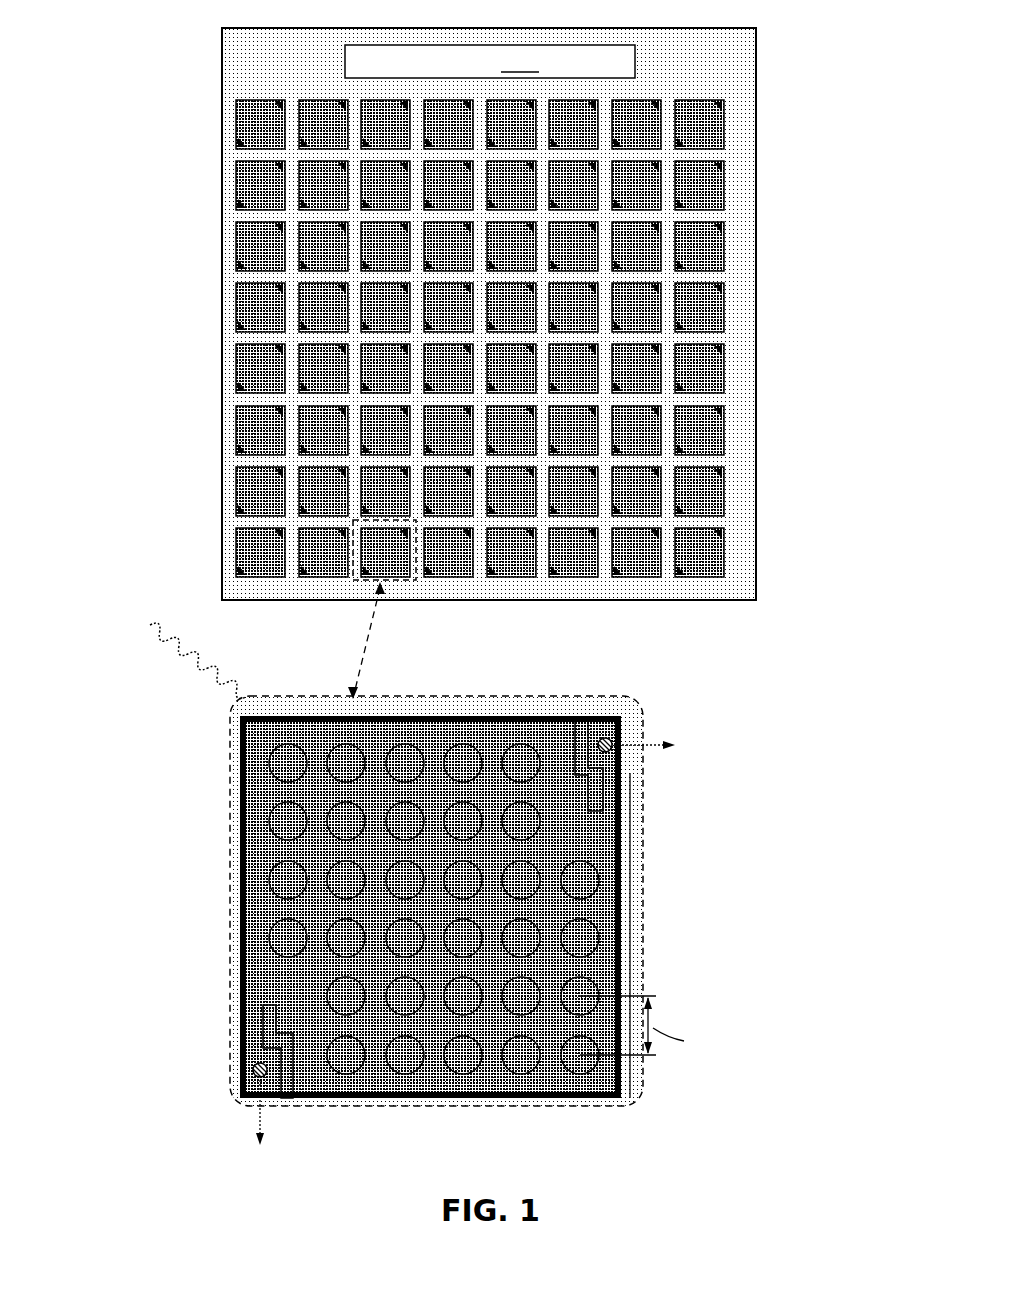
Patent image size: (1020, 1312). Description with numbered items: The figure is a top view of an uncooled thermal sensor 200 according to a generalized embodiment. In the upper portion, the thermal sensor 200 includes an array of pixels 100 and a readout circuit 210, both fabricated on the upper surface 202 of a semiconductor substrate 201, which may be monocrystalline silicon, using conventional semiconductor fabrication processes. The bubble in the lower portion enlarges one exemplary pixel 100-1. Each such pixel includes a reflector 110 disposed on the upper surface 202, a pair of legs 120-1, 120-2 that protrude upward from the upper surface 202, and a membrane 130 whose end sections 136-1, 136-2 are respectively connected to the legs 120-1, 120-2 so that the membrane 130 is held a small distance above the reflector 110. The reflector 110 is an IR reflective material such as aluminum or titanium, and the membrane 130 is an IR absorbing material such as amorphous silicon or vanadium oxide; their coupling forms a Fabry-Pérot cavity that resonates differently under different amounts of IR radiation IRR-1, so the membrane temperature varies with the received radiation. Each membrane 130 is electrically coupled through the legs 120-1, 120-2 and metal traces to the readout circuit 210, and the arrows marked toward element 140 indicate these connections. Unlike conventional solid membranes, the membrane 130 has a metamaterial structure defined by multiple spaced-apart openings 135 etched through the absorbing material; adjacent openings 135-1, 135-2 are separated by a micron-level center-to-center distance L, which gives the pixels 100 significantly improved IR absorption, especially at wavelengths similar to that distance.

The uncooled thermal sensor 200 is at (133, 71).
The substrate 201 is at (211, 228).
The upper surface 202 is at (218, 272).
The readout circuit 210 is at (490, 61).
The pixels 100 is at (307, 173).
The pixel 100-1 is at (405, 565).
The reflector 110 is at (429, 701).
The membrane 130 is at (502, 710).
The openings 135 is at (308, 907).
The opening 135-1 is at (590, 1058).
The opening 135-2 is at (598, 972).
The end section 136-1 is at (237, 1050).
The end section 136-2 is at (614, 712).
The leg 120-1 is at (246, 1066).
The leg 120-2 is at (592, 722).
The readout circuit connection 140 is at (490, 951).
The IR radiation IRR-1 is at (227, 656).